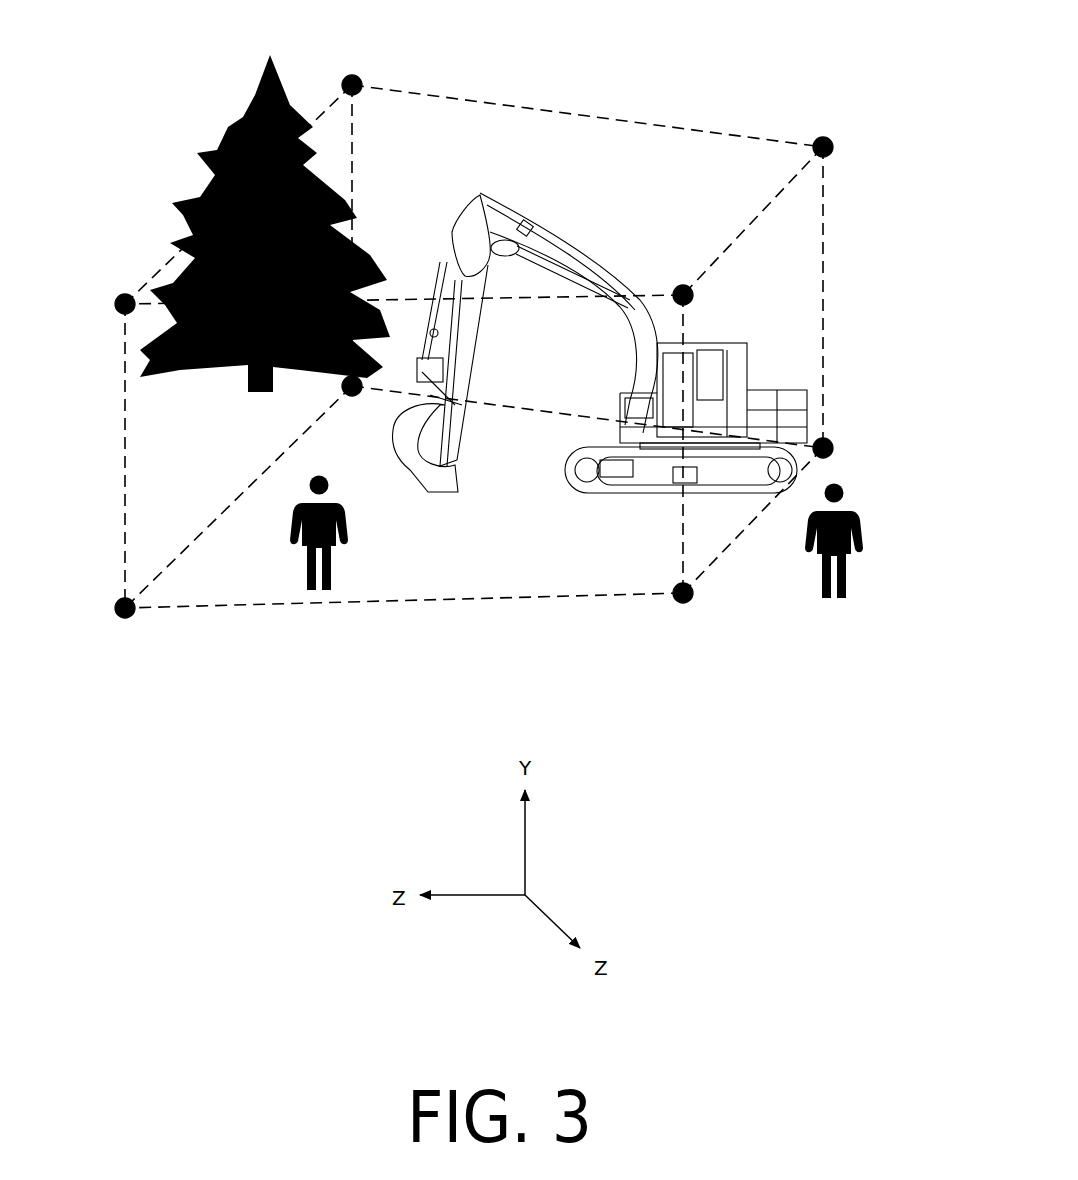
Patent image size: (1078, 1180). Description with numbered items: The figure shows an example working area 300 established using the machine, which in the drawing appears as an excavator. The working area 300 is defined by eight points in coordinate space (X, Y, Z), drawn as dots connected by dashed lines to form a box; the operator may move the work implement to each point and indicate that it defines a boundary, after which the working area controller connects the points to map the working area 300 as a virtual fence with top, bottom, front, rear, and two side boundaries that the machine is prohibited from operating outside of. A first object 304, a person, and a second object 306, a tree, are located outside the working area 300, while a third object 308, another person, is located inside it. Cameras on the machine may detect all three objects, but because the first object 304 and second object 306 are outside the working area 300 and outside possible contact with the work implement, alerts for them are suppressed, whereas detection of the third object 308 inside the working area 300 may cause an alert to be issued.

The working area 300 is at (647, 67).
The first object 304 is at (852, 541).
The second object 306 is at (265, 223).
The third object 308 is at (335, 533).